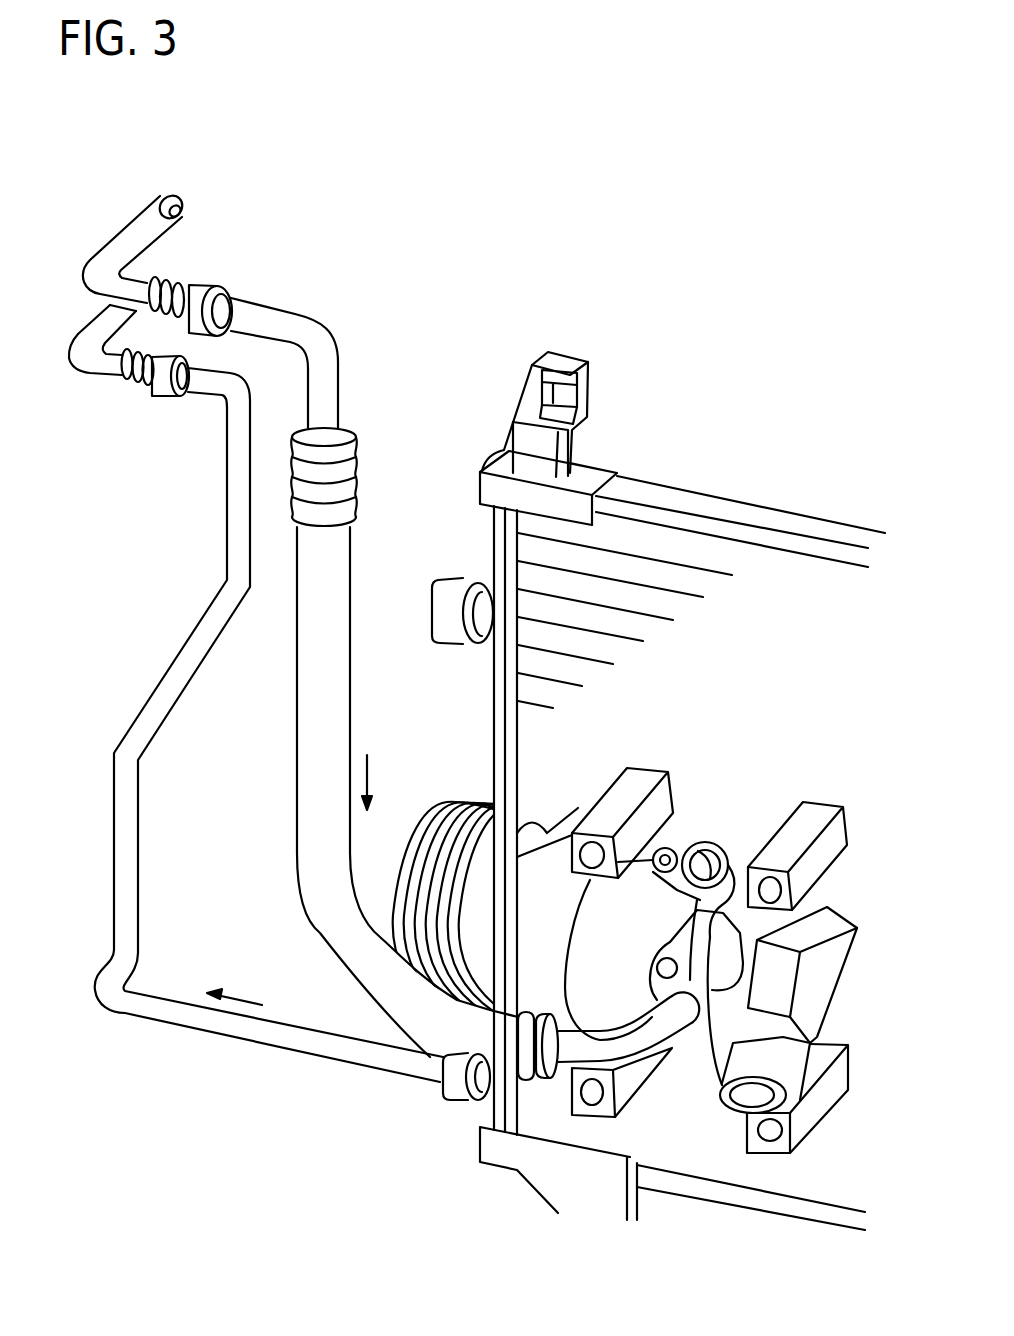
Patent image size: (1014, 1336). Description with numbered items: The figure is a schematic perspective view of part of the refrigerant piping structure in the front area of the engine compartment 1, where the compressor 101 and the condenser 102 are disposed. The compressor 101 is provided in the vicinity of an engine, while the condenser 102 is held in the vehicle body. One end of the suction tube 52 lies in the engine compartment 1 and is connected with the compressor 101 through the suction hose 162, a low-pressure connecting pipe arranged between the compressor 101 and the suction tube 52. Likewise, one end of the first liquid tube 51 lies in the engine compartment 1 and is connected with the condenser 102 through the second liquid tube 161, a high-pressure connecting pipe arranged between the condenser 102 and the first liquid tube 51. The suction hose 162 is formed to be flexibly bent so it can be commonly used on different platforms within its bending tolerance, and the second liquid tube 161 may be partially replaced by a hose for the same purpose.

The engine compartment 1 is at (680, 315).
The first liquid tube 51 is at (82, 333).
The suction tube 52 is at (132, 222).
The compressor 101 is at (735, 818).
The condenser 102 is at (652, 476).
The second liquid tube 161 is at (230, 455).
The suction hose 162 is at (270, 310).